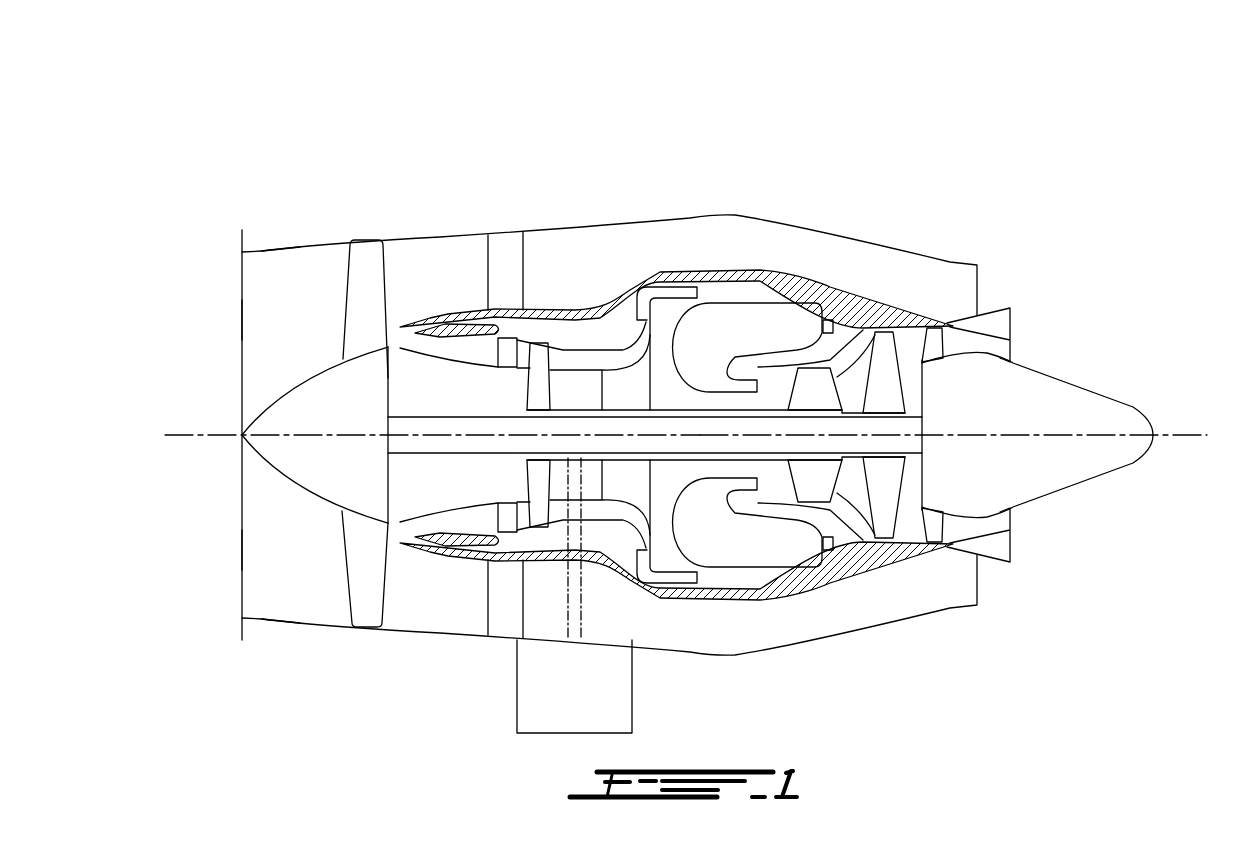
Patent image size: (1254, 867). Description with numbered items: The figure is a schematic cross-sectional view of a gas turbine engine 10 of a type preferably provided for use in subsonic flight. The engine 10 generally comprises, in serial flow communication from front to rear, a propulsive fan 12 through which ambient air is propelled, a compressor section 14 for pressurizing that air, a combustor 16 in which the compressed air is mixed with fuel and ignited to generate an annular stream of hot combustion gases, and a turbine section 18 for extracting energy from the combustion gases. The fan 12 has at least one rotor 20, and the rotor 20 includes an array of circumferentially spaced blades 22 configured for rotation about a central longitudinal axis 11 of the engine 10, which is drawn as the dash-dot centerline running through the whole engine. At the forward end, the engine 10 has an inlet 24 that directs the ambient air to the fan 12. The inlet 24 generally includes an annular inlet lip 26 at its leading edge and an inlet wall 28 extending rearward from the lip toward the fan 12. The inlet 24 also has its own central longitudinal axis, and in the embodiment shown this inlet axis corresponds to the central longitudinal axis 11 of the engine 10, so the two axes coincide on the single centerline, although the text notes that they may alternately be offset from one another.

The gas turbine engine 10 is at (884, 160).
The central longitudinal axis of the engine 11 is at (1183, 432).
The propulsive fan 12 is at (352, 556).
The compressor section 14 is at (588, 358).
The combustor 16 is at (767, 332).
The turbine section 18 is at (858, 548).
The rotor 20 is at (363, 248).
The blades 22 is at (367, 280).
The inlet 24 is at (279, 243).
The annular inlet lip 26 is at (242, 252).
The inlet wall 28 is at (258, 252).